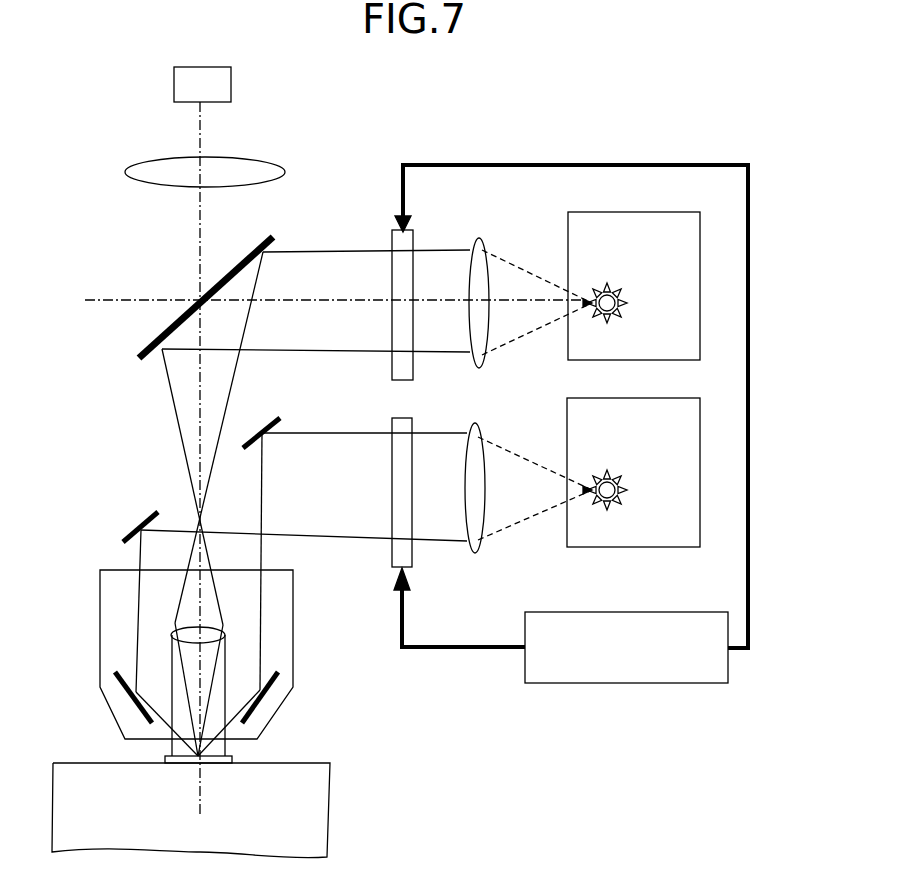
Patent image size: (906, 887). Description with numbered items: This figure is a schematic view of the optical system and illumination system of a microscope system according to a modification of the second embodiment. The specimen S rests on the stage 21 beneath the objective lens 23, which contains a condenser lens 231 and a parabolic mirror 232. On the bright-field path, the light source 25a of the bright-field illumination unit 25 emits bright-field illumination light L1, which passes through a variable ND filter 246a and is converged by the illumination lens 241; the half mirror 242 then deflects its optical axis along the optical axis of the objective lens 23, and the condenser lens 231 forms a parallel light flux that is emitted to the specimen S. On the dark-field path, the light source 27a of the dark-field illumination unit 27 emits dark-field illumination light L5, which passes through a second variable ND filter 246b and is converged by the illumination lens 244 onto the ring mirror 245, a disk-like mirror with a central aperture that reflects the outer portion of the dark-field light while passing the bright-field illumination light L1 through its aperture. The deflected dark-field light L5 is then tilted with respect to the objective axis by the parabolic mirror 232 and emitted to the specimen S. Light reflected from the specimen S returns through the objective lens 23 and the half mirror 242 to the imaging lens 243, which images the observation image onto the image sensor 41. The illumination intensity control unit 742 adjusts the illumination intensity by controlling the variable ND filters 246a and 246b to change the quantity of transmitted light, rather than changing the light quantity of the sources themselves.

The image sensor 41 is at (231, 85).
The imaging lens 243 is at (267, 160).
The half mirror 242 is at (257, 240).
The variable ND filter 246a is at (400, 228).
The variable ND filter 246b is at (400, 415).
The bright-field illumination light L1 is at (440, 250).
The dark-field illumination light L5 is at (438, 542).
The illumination lens 241 is at (481, 240).
The illumination lens 244 is at (478, 552).
The bright-field illumination unit 25 is at (700, 310).
The light source 25a is at (610, 283).
The dark-field illumination unit 27 is at (700, 505).
The light source 27a is at (622, 480).
The ring mirror 245 is at (262, 420).
The illumination intensity control unit 742 is at (663, 684).
The objective lens 23 is at (293, 615).
The condenser lens 231 is at (188, 627).
The parabolic mirror 232 is at (115, 672).
The specimen S is at (233, 760).
The stage 21 is at (293, 820).